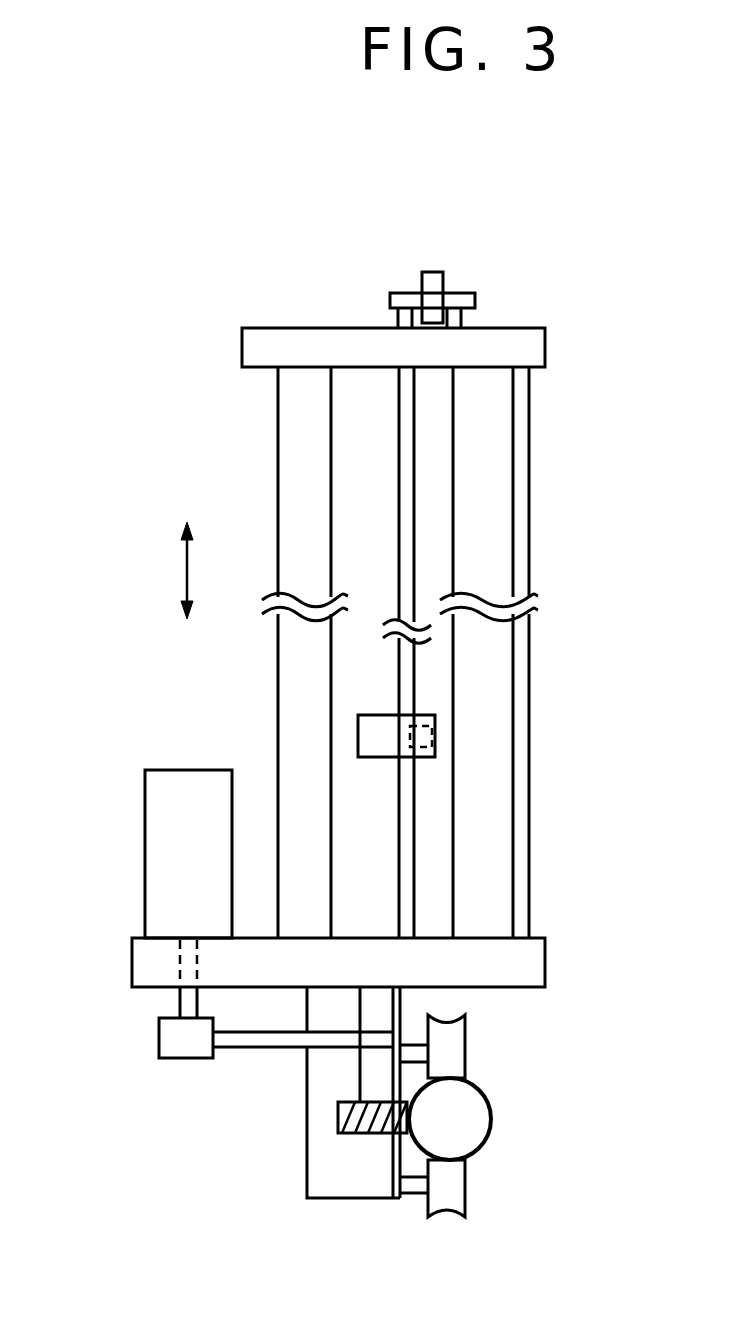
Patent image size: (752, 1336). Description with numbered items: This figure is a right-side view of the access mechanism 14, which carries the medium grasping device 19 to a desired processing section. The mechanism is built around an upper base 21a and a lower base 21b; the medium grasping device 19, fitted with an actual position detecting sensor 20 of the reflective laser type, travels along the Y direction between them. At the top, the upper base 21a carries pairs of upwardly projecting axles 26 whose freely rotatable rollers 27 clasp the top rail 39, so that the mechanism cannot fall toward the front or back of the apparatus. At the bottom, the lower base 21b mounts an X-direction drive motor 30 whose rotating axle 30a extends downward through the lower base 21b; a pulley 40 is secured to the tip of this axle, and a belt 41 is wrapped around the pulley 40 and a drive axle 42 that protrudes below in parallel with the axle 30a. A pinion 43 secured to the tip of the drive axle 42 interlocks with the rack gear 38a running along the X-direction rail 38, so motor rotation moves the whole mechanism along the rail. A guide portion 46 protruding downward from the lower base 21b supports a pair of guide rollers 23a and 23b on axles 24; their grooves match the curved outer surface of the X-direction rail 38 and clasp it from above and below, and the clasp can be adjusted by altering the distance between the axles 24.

The access mechanism 14 is at (205, 322).
The medium grasping device 19 is at (432, 716).
The actual position detecting sensor 20 is at (455, 742).
The upper base 21a is at (545, 351).
The lower base 21b is at (545, 968).
The guide roller 23a is at (452, 1058).
The guide roller 23b is at (458, 1194).
The axles 24 is at (410, 1050).
The upwardly projecting axles 26 is at (398, 325).
The rollers 27 is at (392, 297).
The X-direction drive motor 30 is at (145, 828).
The rotating axle 30a is at (180, 1002).
The X-direction rail 38 is at (466, 1122).
The rack gear 38a is at (388, 1138).
The top rail 39 is at (432, 277).
The pulley 40 is at (160, 1026).
The belt 41 is at (240, 1048).
The drive axle 42 is at (368, 1077).
The pinion 43 is at (343, 1137).
The guide portion 46 is at (307, 1143).